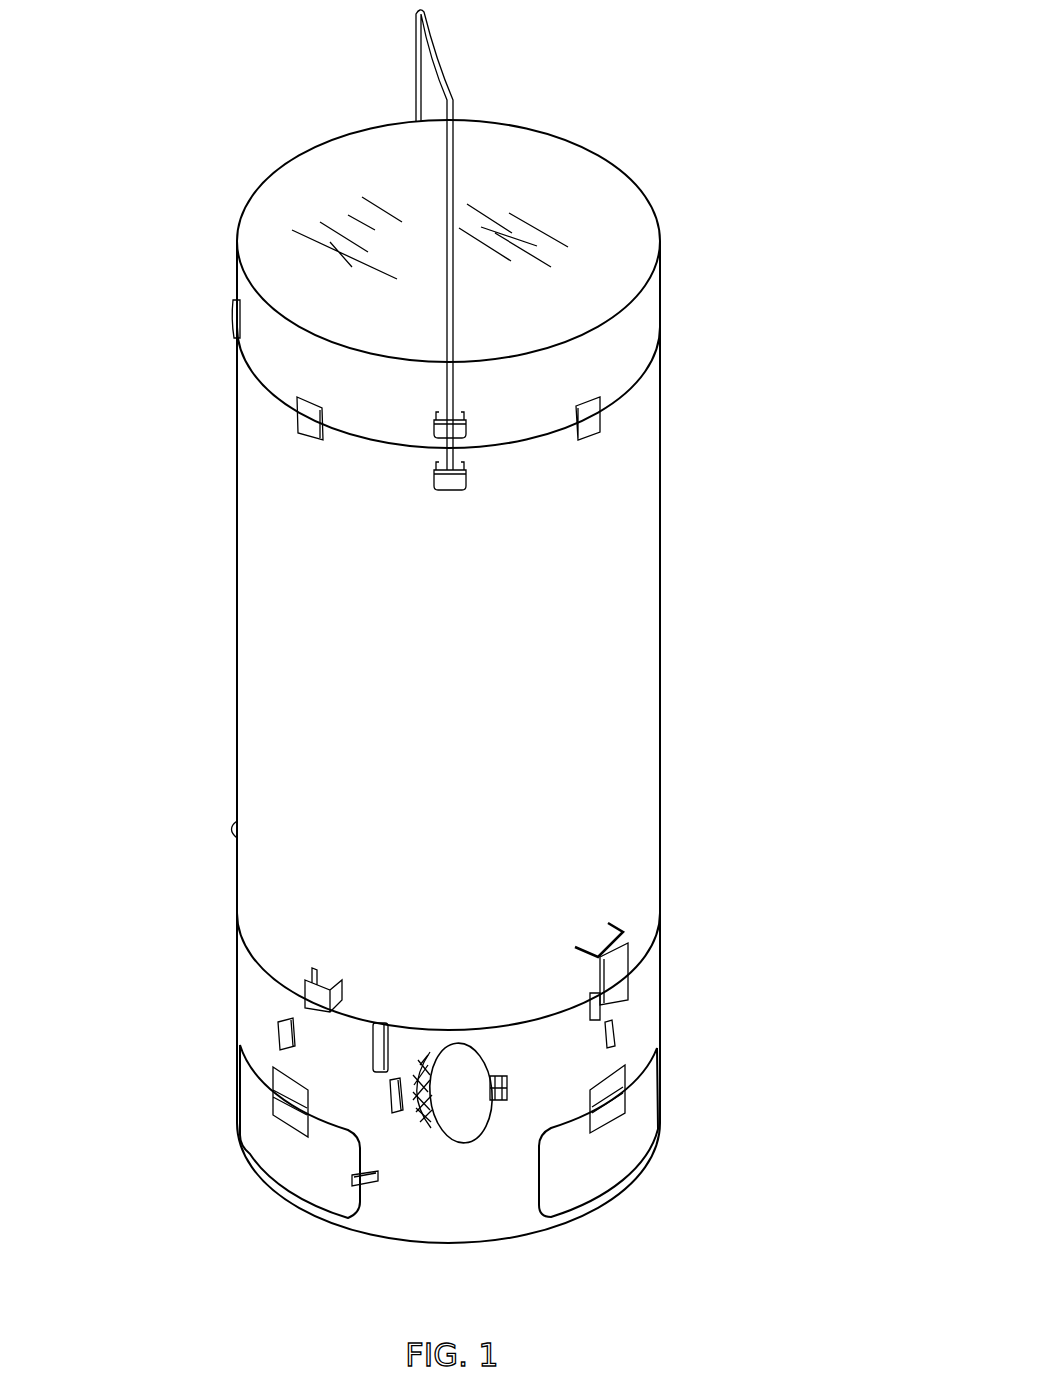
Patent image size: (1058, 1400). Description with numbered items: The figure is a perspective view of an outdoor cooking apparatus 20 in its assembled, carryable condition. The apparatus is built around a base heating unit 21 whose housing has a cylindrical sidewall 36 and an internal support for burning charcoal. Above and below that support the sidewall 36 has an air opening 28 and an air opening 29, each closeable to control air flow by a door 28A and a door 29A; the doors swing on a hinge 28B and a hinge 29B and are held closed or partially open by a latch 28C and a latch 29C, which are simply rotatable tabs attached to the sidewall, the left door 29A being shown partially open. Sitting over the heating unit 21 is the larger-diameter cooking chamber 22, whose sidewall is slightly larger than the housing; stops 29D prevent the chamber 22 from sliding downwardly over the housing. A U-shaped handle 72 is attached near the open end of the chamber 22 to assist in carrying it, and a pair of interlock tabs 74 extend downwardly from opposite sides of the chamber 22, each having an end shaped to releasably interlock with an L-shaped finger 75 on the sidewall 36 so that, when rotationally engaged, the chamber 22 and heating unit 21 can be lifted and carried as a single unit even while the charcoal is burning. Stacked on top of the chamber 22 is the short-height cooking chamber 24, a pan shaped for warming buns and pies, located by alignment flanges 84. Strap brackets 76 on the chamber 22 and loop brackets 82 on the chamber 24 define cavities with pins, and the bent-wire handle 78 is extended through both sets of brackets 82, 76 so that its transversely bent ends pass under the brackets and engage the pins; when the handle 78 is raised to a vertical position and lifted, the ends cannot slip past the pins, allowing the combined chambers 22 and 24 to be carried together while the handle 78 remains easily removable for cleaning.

The outdoor cooking apparatus 20 is at (664, 96).
The base heating unit 21 is at (666, 1015).
The cooking chamber 22 is at (669, 601).
The short-height cooking chamber 24 is at (660, 191).
The air opening 28 is at (415, 1120).
The door 28A is at (473, 1123).
The hinge 28B is at (497, 1077).
The latch 28C is at (392, 1083).
The air opening 29 is at (297, 1207).
The door 29A is at (278, 1158).
The hinge 29B is at (287, 1108).
The latch 29C is at (277, 1037).
The stop 29D is at (390, 1043).
The cylindrical sidewall 36 is at (495, 1210).
The U-shaped handle 72 is at (228, 830).
The interlock tab 74 is at (620, 968).
The L-shaped finger 75 is at (589, 1003).
The strap bracket 76 is at (452, 488).
The bent-wire handle 78 is at (435, 47).
The loop bracket 82 is at (456, 430).
The alignment flange 84 is at (312, 420).